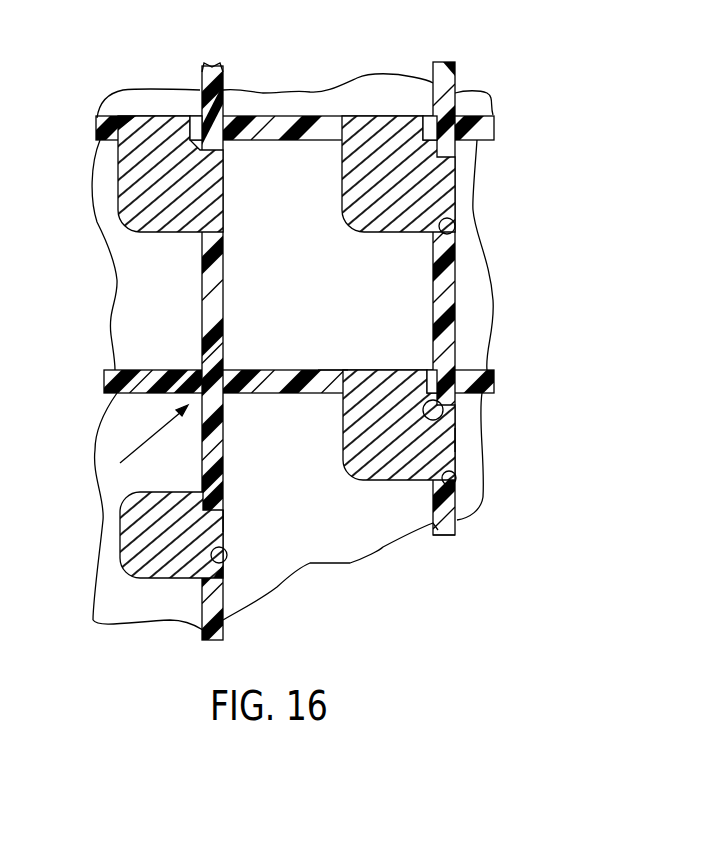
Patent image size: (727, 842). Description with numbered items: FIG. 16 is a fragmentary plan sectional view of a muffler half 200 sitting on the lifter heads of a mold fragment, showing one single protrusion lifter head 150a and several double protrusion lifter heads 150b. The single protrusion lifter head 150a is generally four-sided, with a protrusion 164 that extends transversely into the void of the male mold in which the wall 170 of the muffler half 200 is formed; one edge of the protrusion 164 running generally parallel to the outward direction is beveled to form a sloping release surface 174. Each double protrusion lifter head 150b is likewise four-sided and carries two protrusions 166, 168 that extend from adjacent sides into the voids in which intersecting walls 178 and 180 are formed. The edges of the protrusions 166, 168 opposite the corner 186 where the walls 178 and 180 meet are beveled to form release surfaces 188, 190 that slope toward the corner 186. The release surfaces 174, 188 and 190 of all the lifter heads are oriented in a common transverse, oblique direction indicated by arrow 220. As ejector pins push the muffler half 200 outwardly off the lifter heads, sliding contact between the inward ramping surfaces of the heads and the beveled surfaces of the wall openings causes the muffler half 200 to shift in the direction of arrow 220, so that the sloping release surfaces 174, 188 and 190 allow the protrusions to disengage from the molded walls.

The single protrusion lifter head 150a is at (108, 576).
The double protrusion lifter head 150b is at (178, 232).
The protrusion 164 is at (220, 521).
The protrusion 166 is at (450, 440).
The protrusion 168 is at (400, 372).
The wall 170 is at (223, 613).
The sloping release surface 174 is at (218, 545).
The wall 178 is at (453, 535).
The wall 180 is at (333, 370).
The corner 186 is at (443, 428).
The release surface 188 is at (223, 227).
The release surface 190 is at (105, 118).
The muffler half 200 is at (224, 63).
The arrow 220 is at (140, 452).